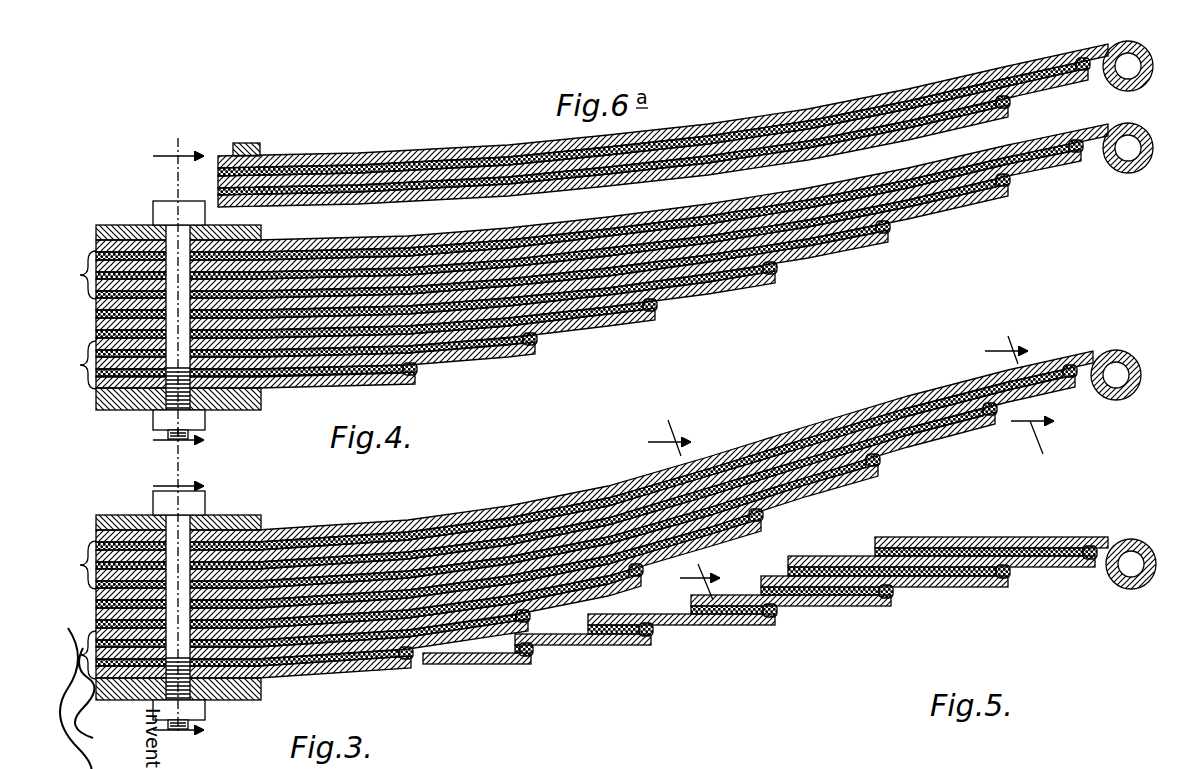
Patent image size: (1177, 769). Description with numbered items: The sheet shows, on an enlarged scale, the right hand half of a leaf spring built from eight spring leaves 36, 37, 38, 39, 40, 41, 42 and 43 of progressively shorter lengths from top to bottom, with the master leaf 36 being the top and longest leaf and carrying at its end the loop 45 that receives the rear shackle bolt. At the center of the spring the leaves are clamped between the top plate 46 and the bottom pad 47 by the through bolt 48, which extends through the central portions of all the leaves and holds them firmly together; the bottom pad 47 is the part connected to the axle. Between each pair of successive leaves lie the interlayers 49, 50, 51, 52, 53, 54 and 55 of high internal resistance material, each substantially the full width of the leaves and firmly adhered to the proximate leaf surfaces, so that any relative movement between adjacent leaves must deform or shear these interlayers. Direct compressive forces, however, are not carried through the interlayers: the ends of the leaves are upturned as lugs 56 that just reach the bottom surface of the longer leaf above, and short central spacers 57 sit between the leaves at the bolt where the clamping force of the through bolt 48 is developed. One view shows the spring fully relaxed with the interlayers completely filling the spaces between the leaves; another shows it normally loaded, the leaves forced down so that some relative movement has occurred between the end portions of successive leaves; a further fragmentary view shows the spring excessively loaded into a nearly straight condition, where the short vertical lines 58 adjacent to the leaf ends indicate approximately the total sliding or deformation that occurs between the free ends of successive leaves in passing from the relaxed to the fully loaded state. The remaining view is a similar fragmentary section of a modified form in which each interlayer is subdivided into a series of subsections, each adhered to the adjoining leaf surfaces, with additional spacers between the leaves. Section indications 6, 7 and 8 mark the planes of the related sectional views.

In FIG. 6a, the master leaf 36 is at (488, 150).
In FIG. 4, the master leaf 36 is at (575, 243).
In FIG. 3, the master leaf 36 is at (782, 430).
In FIG. 5, the master leaf 36 is at (1000, 530).
In FIG. 6a, the spring leaf 37 is at (432, 162).
In FIG. 4, the spring leaf 37 is at (628, 247).
In FIG. 3, the spring leaf 37 is at (737, 463).
In FIG. 5, the spring leaf 37 is at (976, 552).
In FIG. 6a, the spring leaf 38 is at (382, 170).
In FIG. 4, the spring leaf 38 is at (665, 240).
In FIG. 3, the spring leaf 38 is at (706, 492).
In FIG. 5, the spring leaf 38 is at (840, 572).
In FIG. 4, the spring leaf 39 is at (535, 245).
In FIG. 3, the spring leaf 39 is at (617, 540).
In FIG. 5, the spring leaf 39 is at (805, 598).
In FIG. 4, the spring leaf 40 is at (560, 318).
In FIG. 3, the spring leaf 40 is at (690, 536).
In FIG. 5, the spring leaf 40 is at (690, 618).
In FIG. 4, the spring leaf 41 is at (505, 325).
In FIG. 3, the spring leaf 41 is at (625, 578).
In FIG. 5, the spring leaf 41 is at (582, 638).
In FIG. 4, the spring leaf 42 is at (455, 350).
In FIG. 3, the spring leaf 42 is at (470, 627).
In FIG. 5, the spring leaf 42 is at (487, 657).
In FIG. 4, the spring leaf 43 is at (340, 378).
In FIG. 3, the spring leaf 43 is at (345, 668).
In FIG. 6a, the loop 45 is at (1112, 118).
In FIG. 4, the loop 45 is at (1120, 165).
In FIG. 3, the loop 45 is at (1125, 520).
In FIG. 5, the loop 45 is at (1135, 536).
In FIG. 6a, the top plate 46 is at (238, 135).
In FIG. 4, the top plate 46 is at (90, 219).
In FIG. 3, the top plate 46 is at (90, 509).
In FIG. 4, the bottom pad 47 is at (90, 395).
In FIG. 3, the bottom pad 47 is at (222, 692).
In FIG. 4, the through bolt 48 is at (145, 212).
In FIG. 3, the through bolt 48 is at (145, 500).
In FIG. 6a, the interlayer 49 is at (654, 117).
In FIG. 4, the interlayer 49 is at (840, 190).
In FIG. 3, the interlayer 49 is at (942, 392).
In FIG. 5, the interlayer 49 is at (936, 542).
In FIG. 6a, the interlayer 50 is at (614, 145).
In FIG. 4, the interlayer 50 is at (790, 200).
In FIG. 3, the interlayer 50 is at (897, 425).
In FIG. 5, the interlayer 50 is at (897, 562).
In FIG. 4, the interlayer 51 is at (790, 255).
In FIG. 3, the interlayer 51 is at (842, 460).
In FIG. 5, the interlayer 51 is at (790, 588).
In FIG. 4, the interlayer 52 is at (700, 280).
In FIG. 3, the interlayer 52 is at (585, 574).
In FIG. 5, the interlayer 52 is at (735, 600).
In FIG. 4, the interlayer 53 is at (612, 310).
In FIG. 3, the interlayer 53 is at (547, 596).
In FIG. 5, the interlayer 53 is at (603, 626).
In FIG. 4, the interlayer 54 is at (430, 345).
In FIG. 3, the interlayer 54 is at (467, 614).
In FIG. 5, the interlayer 54 is at (524, 649).
In FIG. 4, the interlayer 55 is at (372, 368).
In FIG. 3, the interlayer 55 is at (318, 660).
In FIG. 6a, the upturned lug 56 is at (1005, 102).
In FIG. 4, the upturned lug 56 is at (412, 380).
In FIG. 3, the upturned lug 56 is at (408, 656).
In FIG. 5, the upturned lug 56 is at (526, 648).
In FIG. 4, the central spacer 57 is at (72, 266).
In FIG. 3, the central spacer 57 is at (72, 556).
In FIG. 5, the short vertical line 58 is at (405, 668).
In FIG. 4, the section line 6- 6 is at (178, 296).
In FIG. 3, the section line 6- 6 is at (176, 607).
In FIG. 3, the section line 7- 7 is at (690, 501).
In FIG. 3, the section line 8- 8 is at (1019, 390).